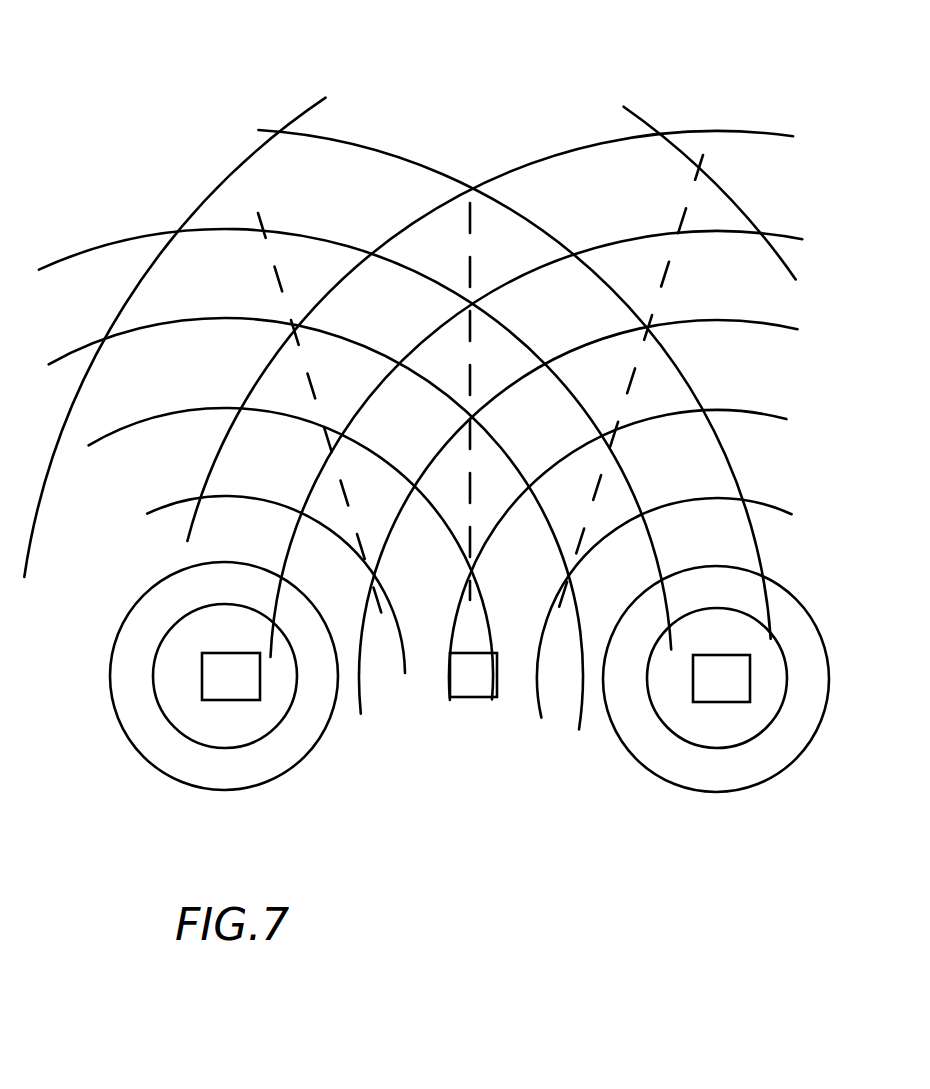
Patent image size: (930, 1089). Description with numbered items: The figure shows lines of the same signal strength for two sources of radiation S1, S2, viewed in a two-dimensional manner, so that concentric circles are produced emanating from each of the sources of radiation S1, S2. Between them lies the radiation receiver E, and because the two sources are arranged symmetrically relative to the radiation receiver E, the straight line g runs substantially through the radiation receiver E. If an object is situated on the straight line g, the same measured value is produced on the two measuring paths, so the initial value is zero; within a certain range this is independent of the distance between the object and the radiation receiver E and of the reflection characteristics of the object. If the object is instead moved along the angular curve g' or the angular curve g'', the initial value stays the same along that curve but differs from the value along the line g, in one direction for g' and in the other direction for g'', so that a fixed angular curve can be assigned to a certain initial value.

The source of radiation S1 is at (232, 688).
The source of radiation S2 is at (717, 680).
The radiation receiver E is at (485, 692).
The straight line g is at (444, 348).
The angular curve g' is at (320, 391).
The angular curve g'' is at (662, 377).